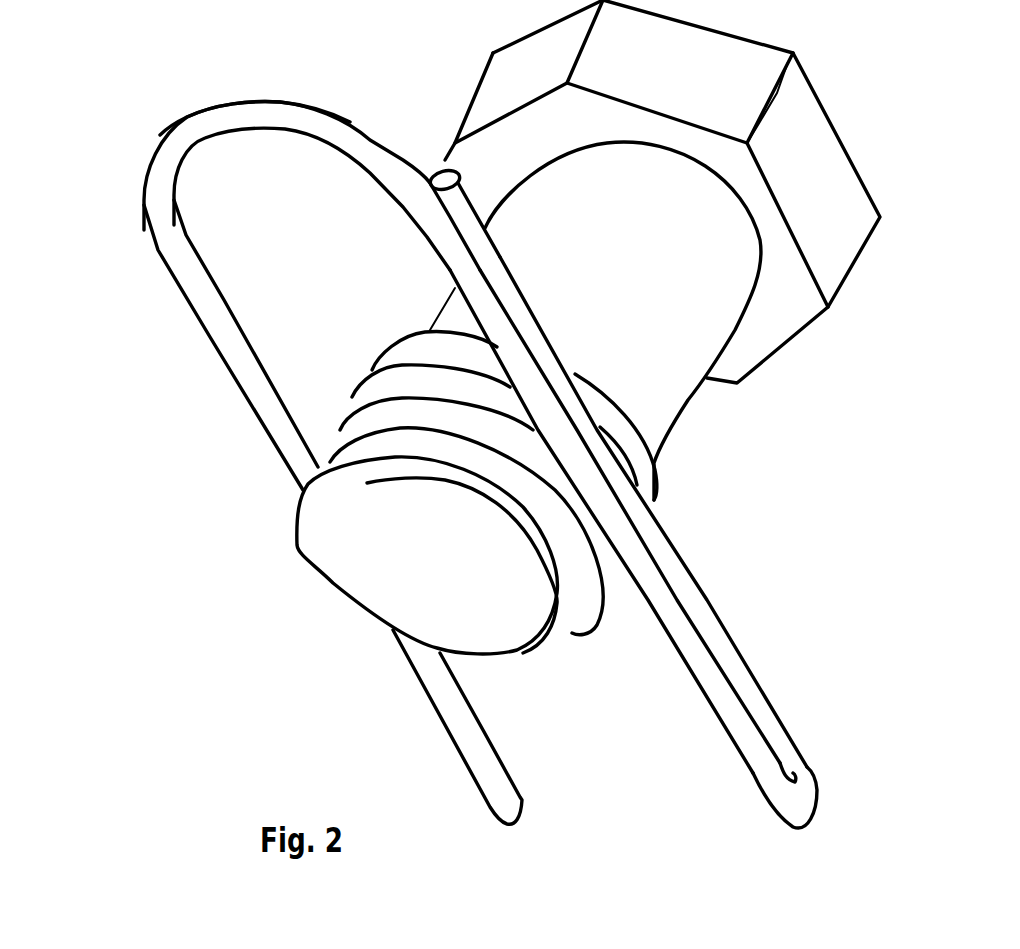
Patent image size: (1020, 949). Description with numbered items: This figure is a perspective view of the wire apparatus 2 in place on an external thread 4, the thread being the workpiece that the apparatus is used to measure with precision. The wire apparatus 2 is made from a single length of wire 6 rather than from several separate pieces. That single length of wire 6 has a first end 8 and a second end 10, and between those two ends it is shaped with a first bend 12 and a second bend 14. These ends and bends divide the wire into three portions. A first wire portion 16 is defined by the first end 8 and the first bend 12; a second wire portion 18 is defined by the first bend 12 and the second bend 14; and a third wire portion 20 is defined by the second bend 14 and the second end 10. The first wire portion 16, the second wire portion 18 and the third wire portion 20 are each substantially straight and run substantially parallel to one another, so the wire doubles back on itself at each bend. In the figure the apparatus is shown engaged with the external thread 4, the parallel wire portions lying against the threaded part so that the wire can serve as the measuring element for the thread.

The wire apparatus 2 is at (290, 785).
The external thread 4 is at (300, 548).
The single length of wire 6 is at (145, 207).
The first end 8 is at (522, 802).
The second end 10 is at (437, 172).
The first bend 12 is at (187, 118).
The second bend 14 is at (802, 827).
The first wire portion 16 is at (212, 337).
The second wire portion 18 is at (705, 705).
The third wire portion 20 is at (693, 570).